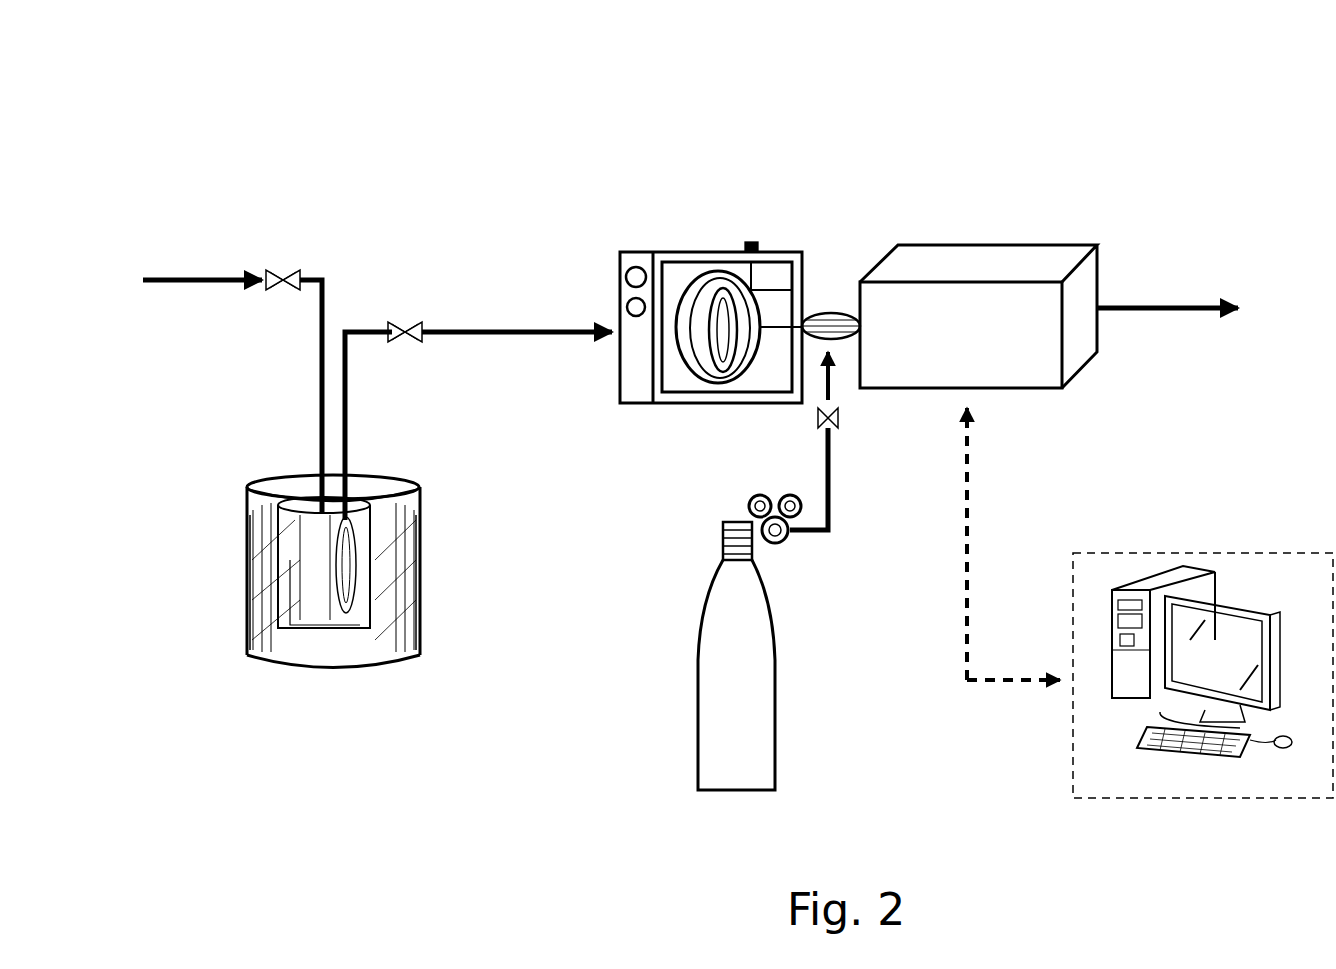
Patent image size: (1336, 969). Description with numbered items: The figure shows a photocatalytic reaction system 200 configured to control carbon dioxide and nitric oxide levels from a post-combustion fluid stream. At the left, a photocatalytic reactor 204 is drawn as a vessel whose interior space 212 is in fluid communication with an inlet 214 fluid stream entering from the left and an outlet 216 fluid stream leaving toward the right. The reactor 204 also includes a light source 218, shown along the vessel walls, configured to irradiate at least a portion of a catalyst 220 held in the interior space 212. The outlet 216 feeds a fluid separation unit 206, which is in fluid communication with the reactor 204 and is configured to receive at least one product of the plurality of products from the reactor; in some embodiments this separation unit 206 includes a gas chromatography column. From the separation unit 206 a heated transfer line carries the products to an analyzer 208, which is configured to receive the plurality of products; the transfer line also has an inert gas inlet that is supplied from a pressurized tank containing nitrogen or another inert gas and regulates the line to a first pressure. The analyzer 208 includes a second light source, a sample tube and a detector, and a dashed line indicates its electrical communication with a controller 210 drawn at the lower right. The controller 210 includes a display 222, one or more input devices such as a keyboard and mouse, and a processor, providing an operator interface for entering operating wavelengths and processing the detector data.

The photocatalytic reaction system 200 is at (690, 76).
The photocatalytic reactor 204 is at (422, 712).
The fluid separation unit 206 is at (648, 252).
The analyzer 208 is at (948, 245).
The controller 210 is at (1203, 638).
The interior space 212 is at (374, 504).
The inlet 214 is at (161, 278).
The outlet 216 is at (446, 330).
The light source 218 is at (256, 628).
The catalyst 220 is at (305, 628).
The display 222 is at (1238, 608).